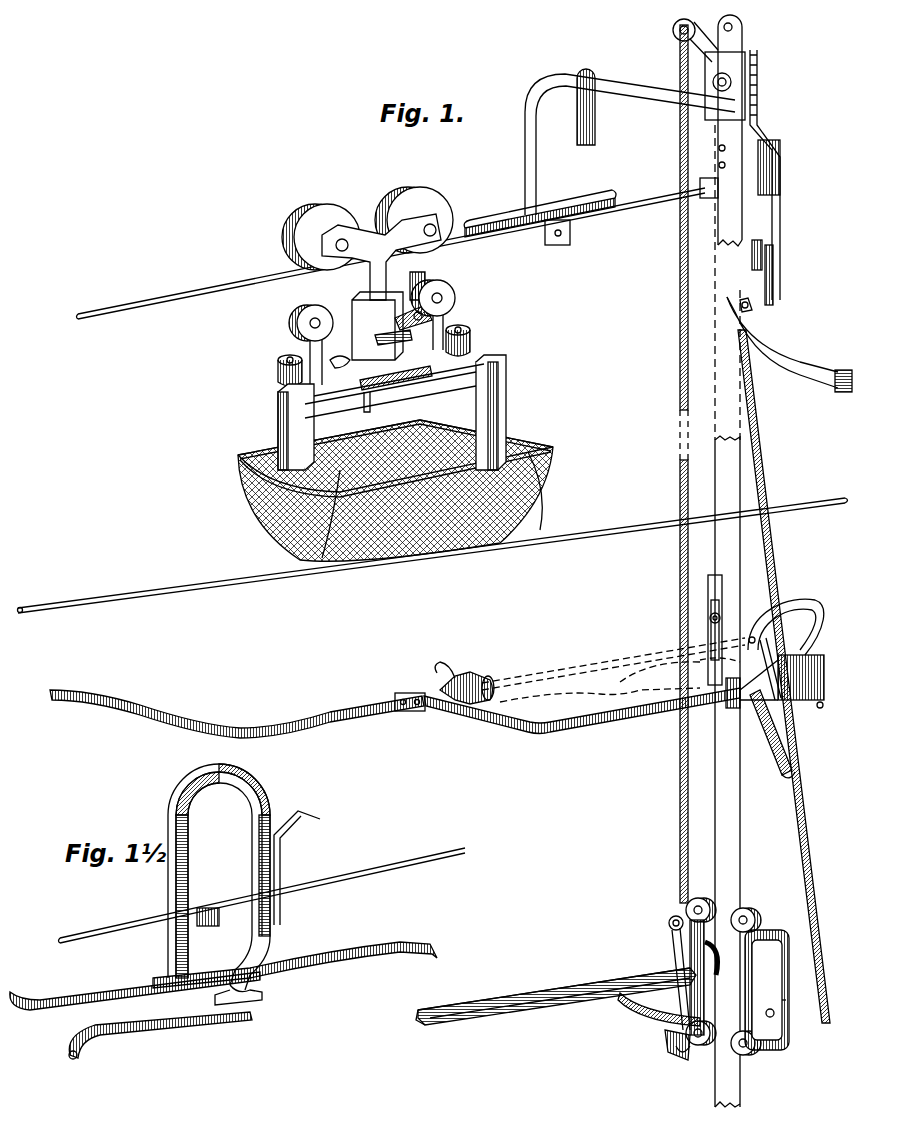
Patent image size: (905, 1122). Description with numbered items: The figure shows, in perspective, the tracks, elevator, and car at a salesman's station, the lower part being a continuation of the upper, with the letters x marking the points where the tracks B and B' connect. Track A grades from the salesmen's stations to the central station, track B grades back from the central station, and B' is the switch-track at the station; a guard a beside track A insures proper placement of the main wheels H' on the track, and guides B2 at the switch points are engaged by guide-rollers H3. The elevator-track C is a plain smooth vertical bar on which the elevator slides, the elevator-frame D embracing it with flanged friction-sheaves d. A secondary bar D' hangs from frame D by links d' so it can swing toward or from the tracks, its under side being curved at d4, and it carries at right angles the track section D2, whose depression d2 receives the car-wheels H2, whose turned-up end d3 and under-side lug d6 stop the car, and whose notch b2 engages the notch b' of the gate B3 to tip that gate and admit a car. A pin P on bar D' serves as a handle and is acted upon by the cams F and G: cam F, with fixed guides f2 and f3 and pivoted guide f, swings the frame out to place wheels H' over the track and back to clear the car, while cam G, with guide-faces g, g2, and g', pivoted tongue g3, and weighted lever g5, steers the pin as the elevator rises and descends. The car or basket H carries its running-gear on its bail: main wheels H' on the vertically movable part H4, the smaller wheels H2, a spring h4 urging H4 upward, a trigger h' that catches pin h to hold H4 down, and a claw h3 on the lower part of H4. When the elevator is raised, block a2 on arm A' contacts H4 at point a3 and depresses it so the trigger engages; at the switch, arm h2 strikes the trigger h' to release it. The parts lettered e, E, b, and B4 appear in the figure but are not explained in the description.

In FIG. 1, the elevator-track C is at (733, 558).
In FIG. 1, the pulley e is at (691, 40).
In FIG. 1, the guide rail E is at (680, 372).
In FIG. 1, the fixed guide f3 is at (755, 244).
In FIG. 1, the fixed guide f2 is at (772, 258).
In FIG. 1, the cam F is at (760, 305).
In FIG. 1, the movable guide f is at (800, 370).
In FIG. 1, the track A is at (398, 248).
In FIG. 1, the guard a is at (505, 224).
In FIG. 1, the arm A' is at (617, 144).
In FIG. 1, the block a2 is at (597, 107).
In FIG. 1, the main wheels H' is at (367, 221).
In FIG. 1, the contact point a3 is at (381, 257).
In FIG. 1, the wheel-carrying part H4 is at (356, 300).
In FIG. 1, the trigger h' is at (429, 276).
In FIG. 1, the catch-pin h is at (403, 325).
In FIG. 1, the spring h4 is at (340, 356).
In FIG. 1, the switch wheels H2 is at (297, 318).
In FIG. 1, the guide-rollers H3 is at (276, 364).
In FIG. 1, the claw h3 is at (406, 378).
In FIG. 1, the car or basket H is at (395, 458).
In FIG. 1, the track B is at (433, 559).
The track B is at (262, 895).
In FIG. 1, the connection points x is at (22, 614).
The connection points x is at (466, 850).
In FIG. 1, the switch-track B' is at (395, 708).
The switch-track B' is at (295, 957).
In FIG. 1, the clamp b is at (447, 688).
In FIG. 1, the notch b' is at (445, 661).
In FIG. 1, the gate B3 is at (478, 677).
In FIG. 1, the track section D2 is at (590, 676).
In FIG. 1, the depression d2 is at (632, 670).
In FIG. 1, the cam G is at (784, 676).
In FIG. 1, the guide-face g2 is at (812, 602).
In FIG. 1, the pivoted tongue g3 is at (780, 640).
In FIG. 1, the weighted lever g5 is at (754, 634).
In FIG. 1, the guide-face g' is at (784, 732).
In FIG. 1, the guide-face g is at (775, 776).
In FIG. 1, the flanged friction-sheaves d is at (729, 978).
In FIG. 1, the elevator-frame D is at (671, 975).
In FIG. 1, the links d' is at (729, 979).
In FIG. 1, the turned-up end d3 is at (721, 958).
In FIG. 1, the secondary frame bar D' is at (708, 996).
In FIG. 1, the pin P is at (776, 1013).
In FIG. 1, the lug d6 is at (664, 1034).
In FIG. 1, the curved under side d4 is at (680, 1056).
In FIG. 1, the notch b2 is at (432, 1024).
The arch B4 is at (170, 816).
The arm h2 is at (297, 868).
The guides B2 is at (118, 992).